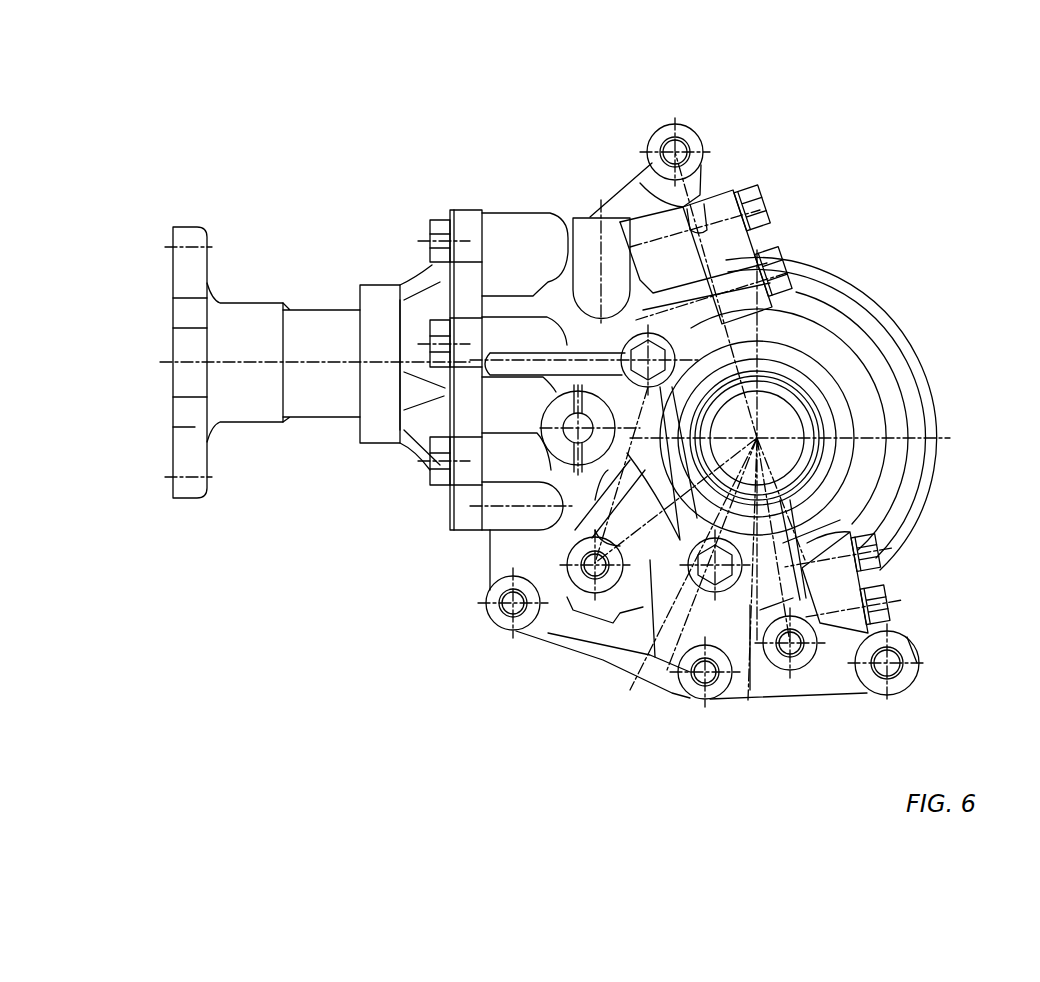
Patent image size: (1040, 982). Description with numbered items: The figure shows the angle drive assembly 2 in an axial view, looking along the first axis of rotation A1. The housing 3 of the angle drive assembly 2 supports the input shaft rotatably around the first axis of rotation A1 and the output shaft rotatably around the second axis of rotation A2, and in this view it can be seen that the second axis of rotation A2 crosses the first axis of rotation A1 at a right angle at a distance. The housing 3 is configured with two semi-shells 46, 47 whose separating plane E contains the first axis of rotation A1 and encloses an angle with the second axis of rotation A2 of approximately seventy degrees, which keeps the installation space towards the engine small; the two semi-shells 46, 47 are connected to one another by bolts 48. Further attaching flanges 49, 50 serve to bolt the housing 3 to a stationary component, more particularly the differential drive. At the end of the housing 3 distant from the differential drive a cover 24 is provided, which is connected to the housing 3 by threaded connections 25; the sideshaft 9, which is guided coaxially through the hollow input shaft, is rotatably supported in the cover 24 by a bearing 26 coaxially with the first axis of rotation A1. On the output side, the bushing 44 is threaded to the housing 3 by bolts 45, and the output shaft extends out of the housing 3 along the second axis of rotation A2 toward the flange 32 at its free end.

The angle drive assembly 2 is at (438, 100).
The housing 3 is at (561, 200).
The sideshaft 9 is at (797, 430).
The cover 24 is at (873, 463).
The threaded connections 25 is at (712, 575).
The bearing 26 is at (798, 378).
The drive flange 32 is at (195, 232).
The bushing 44 is at (385, 292).
The bolts 45 is at (440, 222).
The semi-shell 46 is at (628, 218).
The semi-shell 47 is at (815, 310).
The bolts 48 is at (752, 205).
The attaching flange 49 is at (697, 145).
The attaching flange 50 is at (728, 678).
The first axis of rotation A1 is at (760, 436).
The second axis of rotation A2 is at (250, 358).
The separating plane E is at (845, 528).